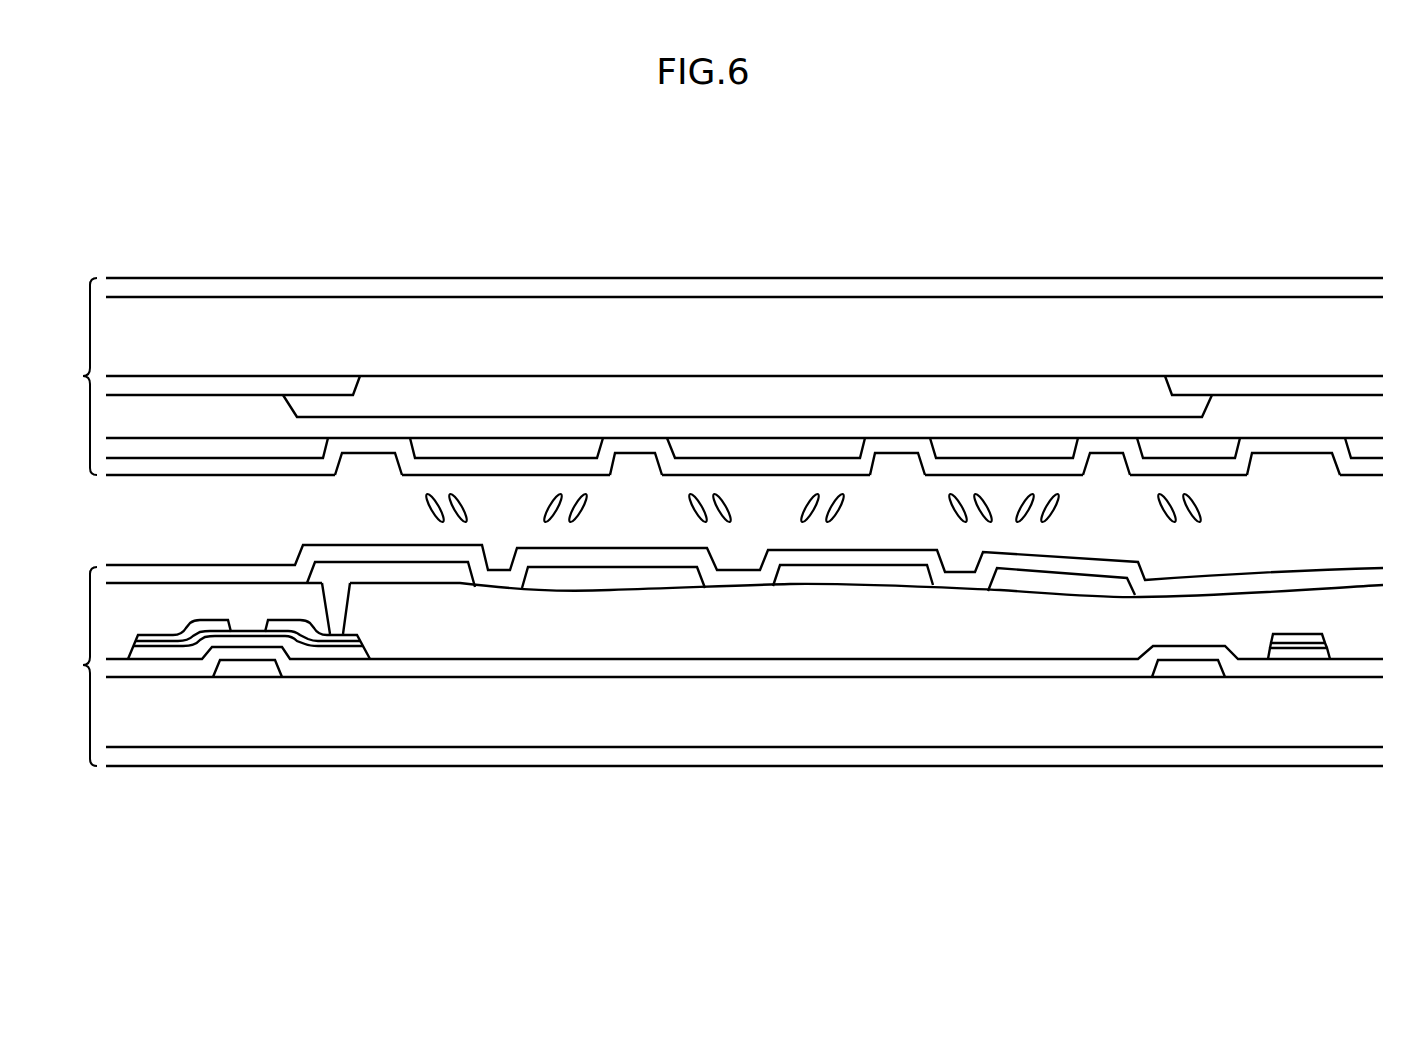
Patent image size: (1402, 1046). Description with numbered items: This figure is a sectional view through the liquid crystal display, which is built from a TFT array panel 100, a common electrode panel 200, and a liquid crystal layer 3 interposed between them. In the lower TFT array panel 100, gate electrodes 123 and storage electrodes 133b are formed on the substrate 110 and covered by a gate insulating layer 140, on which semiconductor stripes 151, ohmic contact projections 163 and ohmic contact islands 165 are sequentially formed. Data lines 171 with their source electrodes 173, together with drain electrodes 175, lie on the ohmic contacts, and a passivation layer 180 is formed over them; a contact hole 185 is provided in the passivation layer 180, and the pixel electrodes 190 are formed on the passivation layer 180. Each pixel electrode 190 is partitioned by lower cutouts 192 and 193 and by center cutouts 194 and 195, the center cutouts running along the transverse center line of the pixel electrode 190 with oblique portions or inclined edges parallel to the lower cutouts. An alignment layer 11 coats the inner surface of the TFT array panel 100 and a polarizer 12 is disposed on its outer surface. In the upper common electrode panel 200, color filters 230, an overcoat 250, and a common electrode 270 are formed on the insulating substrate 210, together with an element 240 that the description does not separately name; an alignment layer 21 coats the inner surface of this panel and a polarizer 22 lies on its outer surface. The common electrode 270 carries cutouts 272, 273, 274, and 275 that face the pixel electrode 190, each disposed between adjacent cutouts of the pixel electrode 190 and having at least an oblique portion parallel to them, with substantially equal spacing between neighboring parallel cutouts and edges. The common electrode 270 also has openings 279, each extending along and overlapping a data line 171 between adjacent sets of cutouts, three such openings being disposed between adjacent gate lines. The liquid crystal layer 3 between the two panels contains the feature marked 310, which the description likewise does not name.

The liquid crystal layer 3 is at (132, 516).
The common electrode panel 200 is at (704, 377).
The insulating substrate 210 is at (432, 313).
The polarizer 22 is at (1333, 290).
The color filter 230 is at (238, 388).
The color filter 240 is at (688, 390).
The overcoat 250 is at (552, 427).
The common electrode 270 is at (792, 443).
The alignment layer 21 is at (1042, 467).
The cutout 272 is at (370, 462).
The cutout 273 is at (637, 462).
The center cutout 274 is at (897, 462).
The center cutout 275 is at (1113, 462).
The opening 279 is at (1302, 462).
The liquid crystal molecules 310 is at (963, 495).
The TFT array panel 100 is at (704, 677).
The substrate 110 is at (855, 725).
The polarizer 12 is at (1028, 757).
The gate electrode 123 is at (260, 670).
The storage electrode 133b is at (1188, 670).
The gate insulating layer 140 is at (767, 668).
The semiconductor stripe 151 is at (238, 646).
The ohmic contact projection 163 is at (210, 645).
The ohmic contact island 165 is at (283, 641).
The data line 171 is at (1283, 641).
The source electrode 173 is at (158, 642).
The drain electrode 175 is at (338, 641).
The passivation layer 180 is at (674, 650).
The contact hole 185 is at (347, 638).
The pixel electrode 190 is at (578, 582).
The alignment layer 11 is at (947, 580).
The lower cutout 192 is at (499, 565).
The lower cutout 193 is at (746, 564).
The center cutout 194 is at (964, 571).
The center cutout 195 is at (1155, 573).